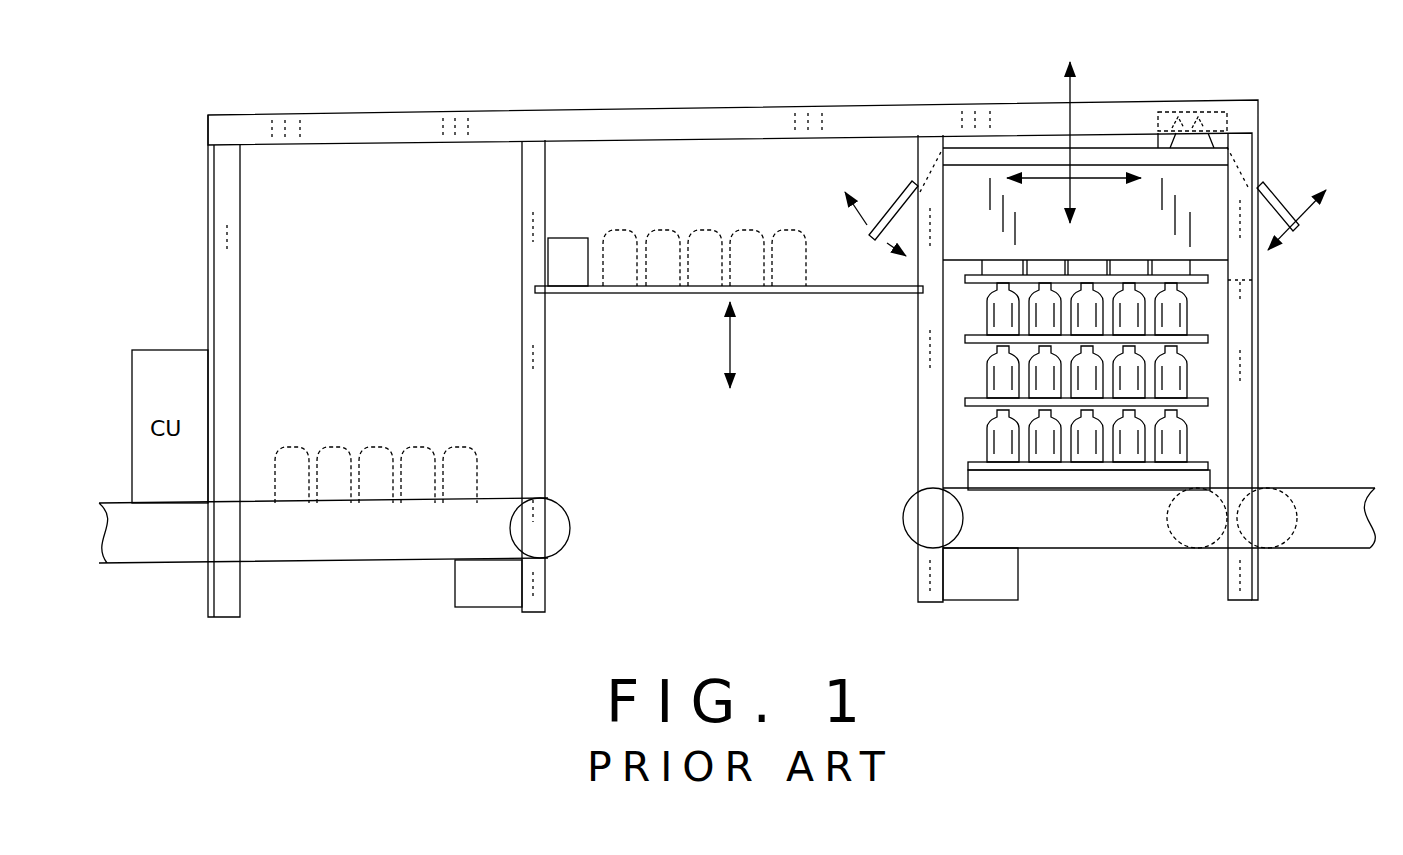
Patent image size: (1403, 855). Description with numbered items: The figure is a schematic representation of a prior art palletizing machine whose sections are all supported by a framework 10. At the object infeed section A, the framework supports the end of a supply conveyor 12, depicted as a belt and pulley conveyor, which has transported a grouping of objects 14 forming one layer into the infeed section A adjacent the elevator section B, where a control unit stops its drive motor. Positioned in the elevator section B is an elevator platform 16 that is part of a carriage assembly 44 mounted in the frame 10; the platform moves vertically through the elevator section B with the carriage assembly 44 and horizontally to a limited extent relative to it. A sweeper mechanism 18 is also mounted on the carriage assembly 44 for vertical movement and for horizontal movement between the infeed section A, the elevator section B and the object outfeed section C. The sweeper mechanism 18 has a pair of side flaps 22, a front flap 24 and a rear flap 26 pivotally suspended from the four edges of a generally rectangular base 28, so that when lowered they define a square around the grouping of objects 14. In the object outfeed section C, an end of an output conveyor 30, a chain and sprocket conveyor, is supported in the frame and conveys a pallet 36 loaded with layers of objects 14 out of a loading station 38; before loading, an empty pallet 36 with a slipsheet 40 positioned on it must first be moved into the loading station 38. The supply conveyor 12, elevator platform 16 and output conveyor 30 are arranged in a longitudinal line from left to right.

The framework 10 is at (437, 127).
The supply conveyor 12 is at (505, 500).
The grouping of objects 14 is at (310, 443).
The elevator platform 16 is at (676, 294).
The sweeper mechanism 18 is at (1198, 183).
The side flaps 22 is at (958, 205).
The front flap 24 is at (1273, 193).
The rear flap 26 is at (893, 205).
The base 28 is at (1110, 158).
The output conveyor 30 is at (1320, 486).
The pallet 36 is at (1203, 462).
The loading station 38 is at (1212, 430).
The slipsheet 40 is at (1203, 395).
The carriage assembly 44 is at (861, 191).
The object infeed section A is at (341, 110).
The elevator section B is at (697, 105).
The object outfeed section C is at (1100, 90).